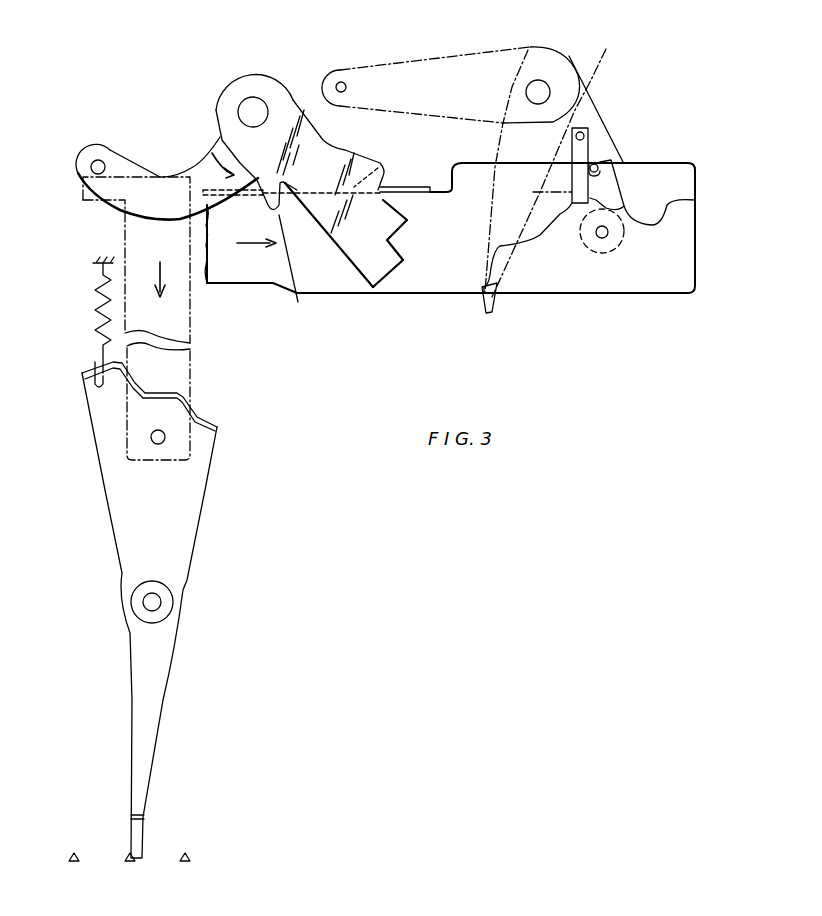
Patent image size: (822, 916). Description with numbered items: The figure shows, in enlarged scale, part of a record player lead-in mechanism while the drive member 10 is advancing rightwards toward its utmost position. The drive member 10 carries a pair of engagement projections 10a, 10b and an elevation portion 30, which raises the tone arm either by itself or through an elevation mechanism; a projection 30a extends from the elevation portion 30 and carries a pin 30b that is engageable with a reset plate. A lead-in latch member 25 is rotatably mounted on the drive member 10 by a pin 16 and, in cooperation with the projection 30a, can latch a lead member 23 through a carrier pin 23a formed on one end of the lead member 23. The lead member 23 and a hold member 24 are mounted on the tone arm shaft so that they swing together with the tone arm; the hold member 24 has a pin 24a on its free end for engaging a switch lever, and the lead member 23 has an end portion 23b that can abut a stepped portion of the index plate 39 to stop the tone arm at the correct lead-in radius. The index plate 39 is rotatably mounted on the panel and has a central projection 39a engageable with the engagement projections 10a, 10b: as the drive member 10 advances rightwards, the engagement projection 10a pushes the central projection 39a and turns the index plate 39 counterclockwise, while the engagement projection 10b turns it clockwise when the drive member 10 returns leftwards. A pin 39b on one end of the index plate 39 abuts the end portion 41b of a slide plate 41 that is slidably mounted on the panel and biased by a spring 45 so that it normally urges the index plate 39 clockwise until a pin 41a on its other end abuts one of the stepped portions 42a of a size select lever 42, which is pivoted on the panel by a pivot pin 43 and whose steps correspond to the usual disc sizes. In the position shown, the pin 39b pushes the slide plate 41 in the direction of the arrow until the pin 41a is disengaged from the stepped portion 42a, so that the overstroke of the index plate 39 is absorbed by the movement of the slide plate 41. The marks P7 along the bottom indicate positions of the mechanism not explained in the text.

The drive member 10 is at (343, 294).
The engagement projection 10a is at (216, 147).
The engagement projection 10b is at (382, 170).
The pin 16 is at (604, 240).
The lead member 23 is at (552, 168).
The carrier pin 23a is at (592, 161).
The end portion 23b is at (494, 298).
The hold member 24 is at (510, 47).
The pin 24a is at (343, 81).
The lead-in latch member 25 is at (607, 197).
The elevation portion 30 is at (682, 243).
The projection 30a is at (591, 140).
The pin 30b is at (589, 139).
The index plate 39 is at (262, 87).
The central projection 39a is at (289, 269).
The pin 39b is at (99, 160).
The slide plate 41 is at (192, 308).
The pin 41a is at (164, 442).
The end portion 41b is at (141, 176).
The size select lever 42 is at (180, 553).
The stepped portions 42a is at (173, 390).
The pivot pin 43 is at (162, 602).
The spring 45 is at (95, 297).
The position marker P7 is at (71, 872).